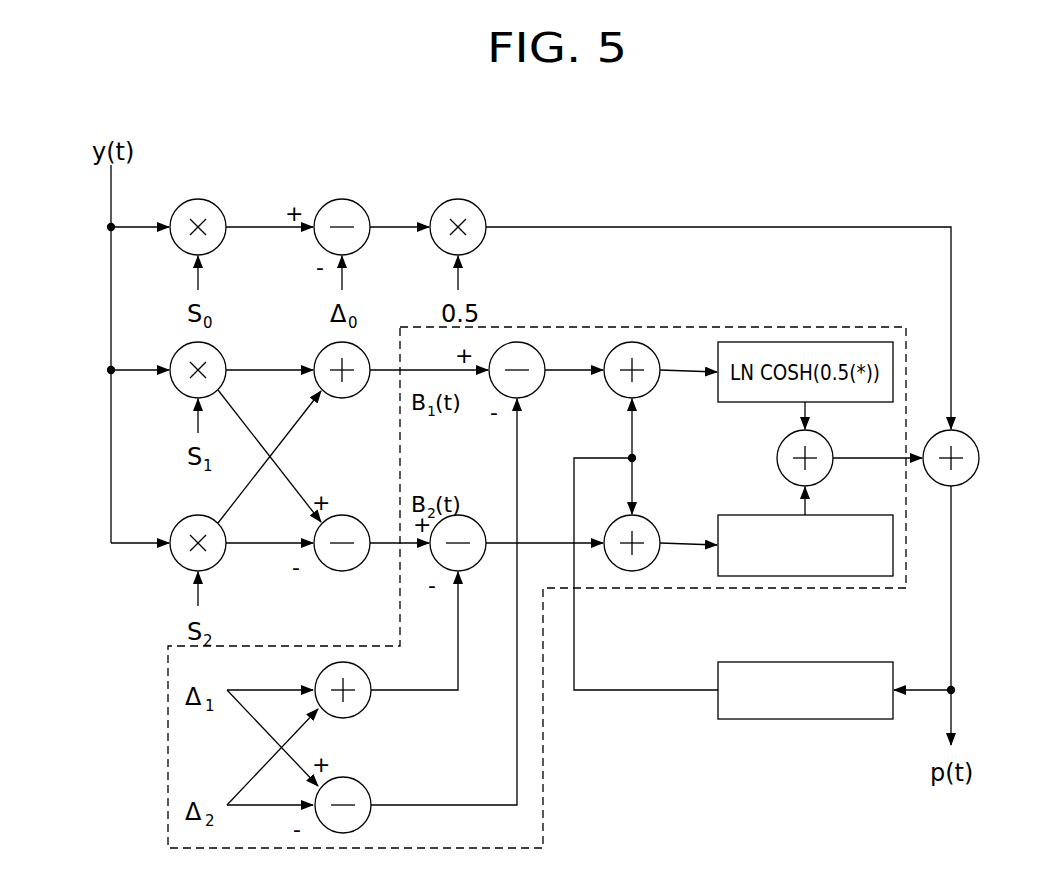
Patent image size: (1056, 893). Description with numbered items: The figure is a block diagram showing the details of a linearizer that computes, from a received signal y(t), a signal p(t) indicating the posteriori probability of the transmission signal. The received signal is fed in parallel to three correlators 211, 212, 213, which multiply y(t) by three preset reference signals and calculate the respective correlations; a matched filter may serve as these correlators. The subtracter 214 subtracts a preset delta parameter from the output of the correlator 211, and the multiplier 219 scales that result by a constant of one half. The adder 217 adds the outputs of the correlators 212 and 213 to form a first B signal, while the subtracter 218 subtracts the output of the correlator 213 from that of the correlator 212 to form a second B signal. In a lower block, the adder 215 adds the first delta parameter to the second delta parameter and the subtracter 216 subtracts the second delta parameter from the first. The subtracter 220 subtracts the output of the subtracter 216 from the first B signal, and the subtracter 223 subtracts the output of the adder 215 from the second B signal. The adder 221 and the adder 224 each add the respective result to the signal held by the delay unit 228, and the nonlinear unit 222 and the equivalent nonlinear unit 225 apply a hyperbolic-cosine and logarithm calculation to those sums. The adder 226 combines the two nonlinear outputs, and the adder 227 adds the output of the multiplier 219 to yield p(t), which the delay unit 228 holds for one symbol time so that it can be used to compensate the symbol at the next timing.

The correlator 211 is at (220, 208).
The correlator 212 is at (220, 351).
The correlator 213 is at (206, 516).
The subtracter 214 is at (363, 208).
The adder 215 is at (345, 662).
The subtracter 216 is at (368, 790).
The adder 217 is at (362, 352).
The subtracter 218 is at (356, 517).
The multiplier 219 is at (479, 208).
The subtracter 220 is at (541, 388).
The adder 221 is at (656, 388).
The nonlinear unit 222 is at (850, 342).
The subtracter 223 is at (456, 516).
The adder 224 is at (656, 522).
The nonlinear unit 225 is at (852, 515).
The adder 226 is at (777, 456).
The adder 227 is at (972, 439).
The delay unit 228 is at (921, 655).